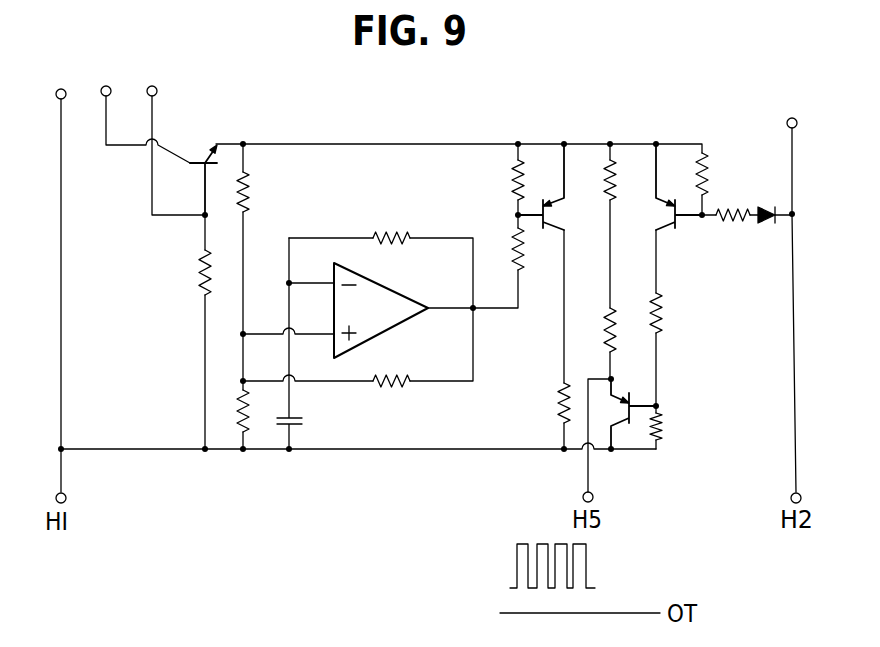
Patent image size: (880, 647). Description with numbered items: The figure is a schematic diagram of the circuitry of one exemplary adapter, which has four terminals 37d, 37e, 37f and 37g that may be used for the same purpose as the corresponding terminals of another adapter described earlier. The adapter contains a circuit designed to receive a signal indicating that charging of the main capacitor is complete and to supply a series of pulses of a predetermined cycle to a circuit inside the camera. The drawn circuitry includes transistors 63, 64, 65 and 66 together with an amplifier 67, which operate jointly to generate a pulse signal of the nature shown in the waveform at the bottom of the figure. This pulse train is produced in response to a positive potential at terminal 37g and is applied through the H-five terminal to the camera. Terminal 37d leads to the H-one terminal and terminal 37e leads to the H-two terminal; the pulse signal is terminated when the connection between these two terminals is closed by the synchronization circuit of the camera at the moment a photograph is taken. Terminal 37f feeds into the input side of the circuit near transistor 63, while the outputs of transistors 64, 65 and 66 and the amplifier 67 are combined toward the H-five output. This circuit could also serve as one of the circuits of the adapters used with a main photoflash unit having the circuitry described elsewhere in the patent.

The terminal 37d is at (48, 276).
The terminal 37e is at (787, 149).
The terminal 37f is at (139, 111).
The terminal 37g is at (176, 137).
The transistor 63 is at (198, 168).
The transistor 64 is at (558, 204).
The transistor 65 is at (685, 187).
The transistor 66 is at (628, 396).
The amplifier 67 is at (380, 282).